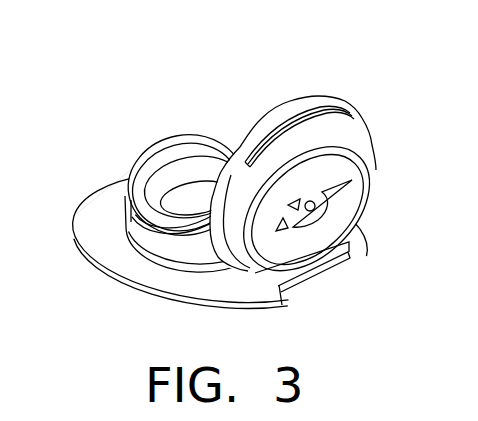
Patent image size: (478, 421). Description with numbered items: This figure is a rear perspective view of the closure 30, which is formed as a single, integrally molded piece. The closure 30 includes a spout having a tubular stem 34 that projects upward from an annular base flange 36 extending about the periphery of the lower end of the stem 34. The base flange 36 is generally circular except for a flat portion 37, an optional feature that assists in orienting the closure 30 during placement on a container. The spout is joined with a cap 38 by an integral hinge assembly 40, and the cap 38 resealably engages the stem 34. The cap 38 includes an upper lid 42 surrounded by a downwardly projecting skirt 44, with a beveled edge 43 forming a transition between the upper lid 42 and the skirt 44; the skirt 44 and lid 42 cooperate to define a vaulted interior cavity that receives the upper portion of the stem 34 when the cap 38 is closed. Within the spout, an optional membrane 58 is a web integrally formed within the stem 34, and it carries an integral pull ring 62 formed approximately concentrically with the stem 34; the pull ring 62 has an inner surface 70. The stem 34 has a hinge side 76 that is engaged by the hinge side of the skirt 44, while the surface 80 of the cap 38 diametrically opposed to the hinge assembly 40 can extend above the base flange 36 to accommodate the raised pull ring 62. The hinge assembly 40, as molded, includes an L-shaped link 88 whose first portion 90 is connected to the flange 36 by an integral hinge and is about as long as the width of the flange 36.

The closure 30 is at (153, 68).
The stem 34 is at (170, 172).
The base flange 36 is at (207, 240).
The flat portion 37 is at (108, 176).
The cap 38 is at (326, 180).
The hinge assembly 40 is at (320, 297).
The upper lid 42 is at (361, 173).
The beveled edge 43 is at (367, 133).
The skirt 44 is at (293, 183).
The membrane 58 is at (196, 198).
The pull ring 62 is at (177, 140).
The inner surface 70 is at (193, 179).
The hinge side 76 is at (215, 267).
The surface 80 is at (337, 130).
The L-shaped link 88 is at (282, 300).
The first portion 90 is at (313, 288).